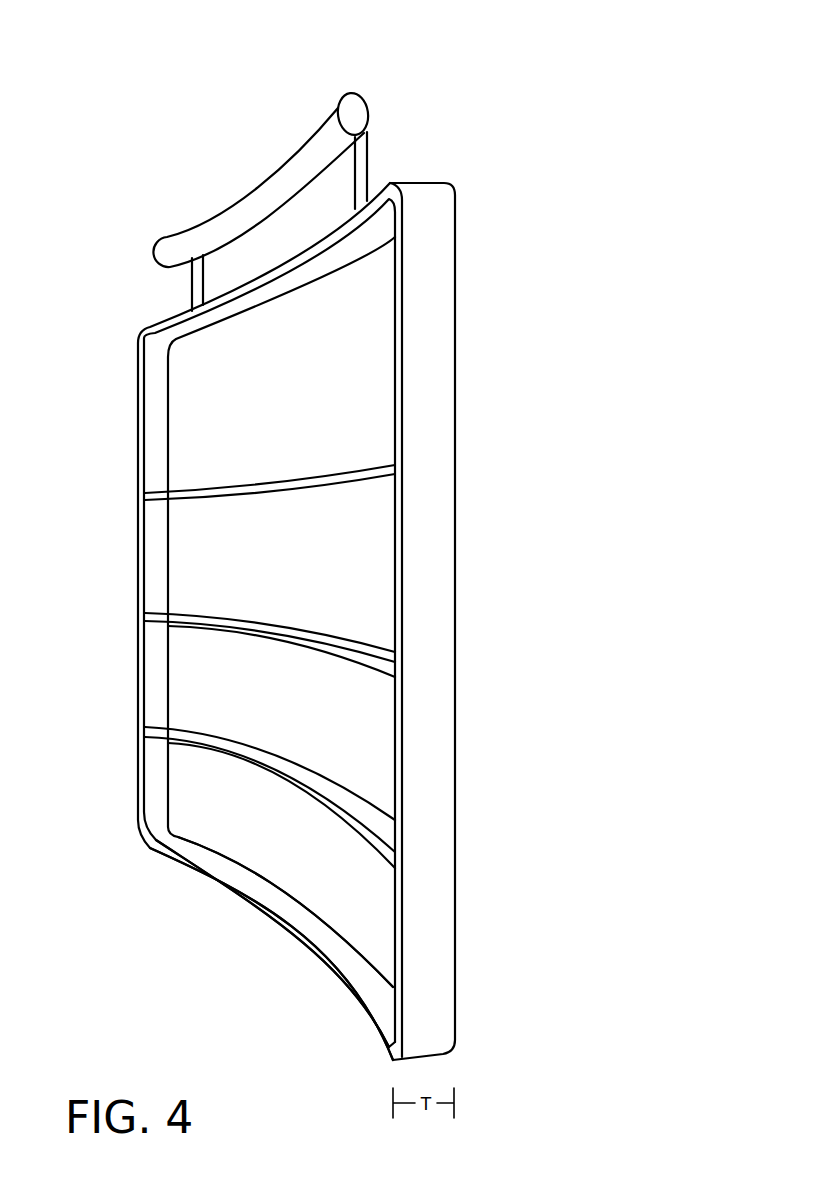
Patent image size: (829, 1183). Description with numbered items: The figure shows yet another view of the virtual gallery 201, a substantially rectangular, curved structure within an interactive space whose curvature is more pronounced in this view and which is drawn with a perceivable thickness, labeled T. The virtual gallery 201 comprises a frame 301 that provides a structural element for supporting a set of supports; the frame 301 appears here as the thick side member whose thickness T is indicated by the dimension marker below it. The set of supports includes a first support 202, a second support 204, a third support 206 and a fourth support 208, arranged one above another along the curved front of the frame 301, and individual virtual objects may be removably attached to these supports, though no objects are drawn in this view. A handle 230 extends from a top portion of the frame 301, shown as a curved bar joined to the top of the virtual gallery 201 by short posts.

The virtual gallery 201 is at (297, 538).
The first support 202 is at (163, 503).
The second support 204 is at (183, 627).
The third support 206 is at (187, 750).
The fourth support 208 is at (200, 880).
The handle 230 is at (322, 122).
The frame 301 is at (456, 326).